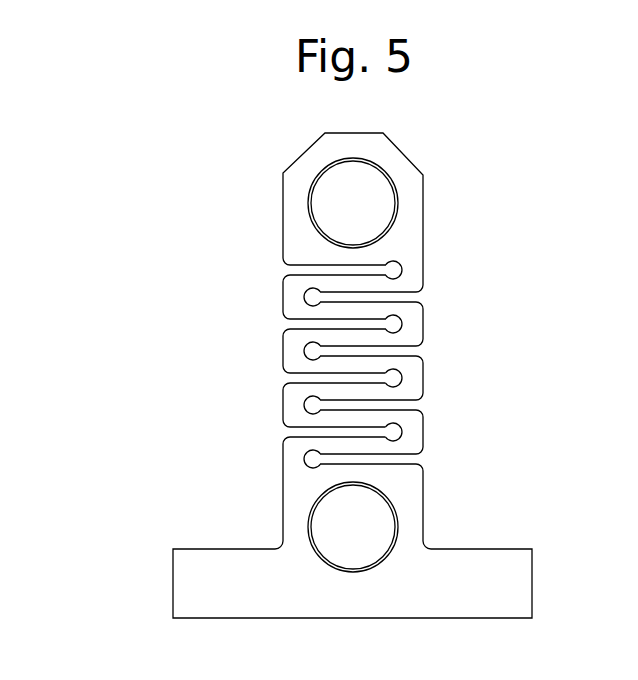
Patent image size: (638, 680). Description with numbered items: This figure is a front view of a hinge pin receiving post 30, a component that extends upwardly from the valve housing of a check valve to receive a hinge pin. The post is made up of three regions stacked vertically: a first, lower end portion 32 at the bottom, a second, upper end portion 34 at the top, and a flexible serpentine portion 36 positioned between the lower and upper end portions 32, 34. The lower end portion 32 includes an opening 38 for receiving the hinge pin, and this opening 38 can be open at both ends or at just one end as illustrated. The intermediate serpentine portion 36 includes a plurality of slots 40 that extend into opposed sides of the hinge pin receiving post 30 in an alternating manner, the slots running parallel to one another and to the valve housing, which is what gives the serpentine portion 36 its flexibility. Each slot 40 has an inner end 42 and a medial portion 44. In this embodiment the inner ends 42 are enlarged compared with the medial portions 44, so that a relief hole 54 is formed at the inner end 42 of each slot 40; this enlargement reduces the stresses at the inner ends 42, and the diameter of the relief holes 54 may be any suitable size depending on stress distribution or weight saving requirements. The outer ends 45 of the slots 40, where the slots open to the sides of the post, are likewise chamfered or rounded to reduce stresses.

The hinge pin receiving post 30 is at (130, 182).
The lower end portion 32 is at (502, 549).
The upper end portion 34 is at (425, 185).
The serpentine portion 36 is at (423, 323).
The opening 38 is at (322, 173).
The slots 40 is at (307, 378).
The inner end 42 is at (397, 432).
The medial portion 44 is at (307, 323).
The outer ends 45 is at (423, 289).
The relief hole 54 is at (397, 378).